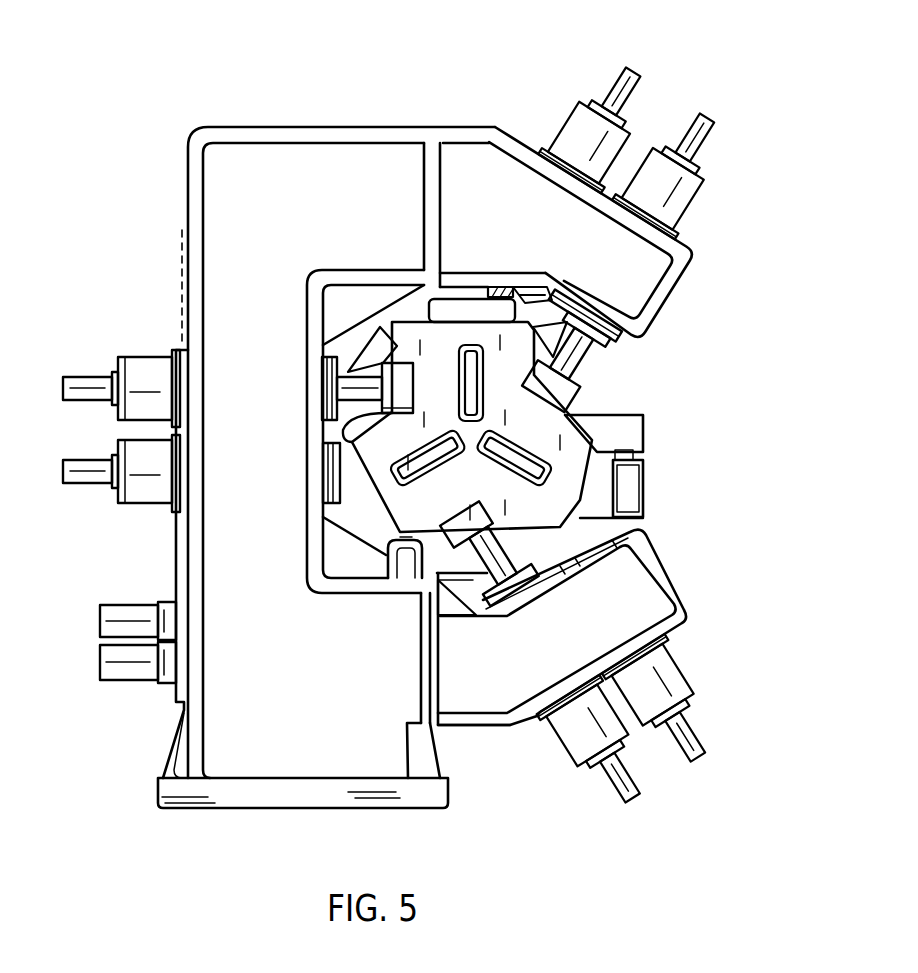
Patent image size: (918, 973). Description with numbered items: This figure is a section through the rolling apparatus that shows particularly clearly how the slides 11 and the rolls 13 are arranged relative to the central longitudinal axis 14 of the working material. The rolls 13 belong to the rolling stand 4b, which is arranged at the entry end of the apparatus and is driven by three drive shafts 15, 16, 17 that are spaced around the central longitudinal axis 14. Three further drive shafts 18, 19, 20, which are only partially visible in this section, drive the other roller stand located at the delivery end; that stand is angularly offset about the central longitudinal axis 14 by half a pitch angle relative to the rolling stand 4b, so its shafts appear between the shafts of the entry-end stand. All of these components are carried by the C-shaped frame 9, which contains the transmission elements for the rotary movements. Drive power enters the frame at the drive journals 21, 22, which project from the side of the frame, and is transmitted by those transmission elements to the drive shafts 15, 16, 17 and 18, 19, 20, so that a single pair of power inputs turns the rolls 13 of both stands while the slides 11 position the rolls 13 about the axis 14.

The C-shaped frame 9 is at (212, 177).
The slides 11 is at (407, 303).
The rolls 13 is at (462, 362).
The central longitudinal axis 14 is at (473, 432).
The drive shaft 15 is at (503, 590).
The drive shaft 16 is at (590, 350).
The drive shaft 17 is at (327, 383).
The drive shaft 18 is at (637, 517).
The drive shaft 19 is at (505, 287).
The drive shaft 20 is at (325, 485).
The drive journal 21 is at (83, 385).
The drive journal 22 is at (83, 470).
The rolling stand 4b is at (372, 440).